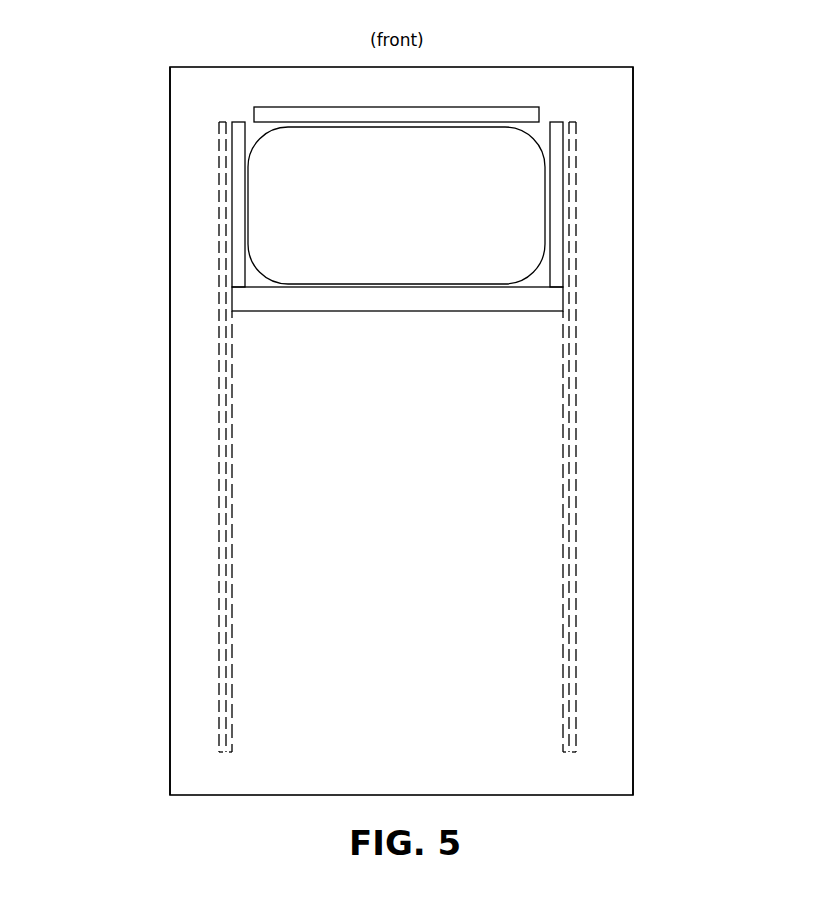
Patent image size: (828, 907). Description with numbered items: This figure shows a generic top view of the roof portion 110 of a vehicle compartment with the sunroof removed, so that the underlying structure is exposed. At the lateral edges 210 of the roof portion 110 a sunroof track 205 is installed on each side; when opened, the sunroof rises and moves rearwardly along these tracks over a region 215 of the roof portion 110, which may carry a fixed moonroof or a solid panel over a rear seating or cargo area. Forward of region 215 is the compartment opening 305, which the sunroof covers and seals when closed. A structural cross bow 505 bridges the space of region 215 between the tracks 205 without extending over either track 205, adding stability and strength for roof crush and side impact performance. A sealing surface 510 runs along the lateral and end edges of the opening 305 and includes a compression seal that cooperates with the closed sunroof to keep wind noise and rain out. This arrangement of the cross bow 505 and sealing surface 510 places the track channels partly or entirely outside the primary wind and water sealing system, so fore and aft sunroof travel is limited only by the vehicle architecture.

The roof portion 110 is at (183, 115).
The lateral edges 210 is at (174, 483).
The sealing surface 510 is at (487, 107).
The compartment opening 305 is at (396, 205).
The structural cross bow 505 is at (255, 300).
The sunroof track 205 is at (233, 415).
The region 215 is at (397, 419).